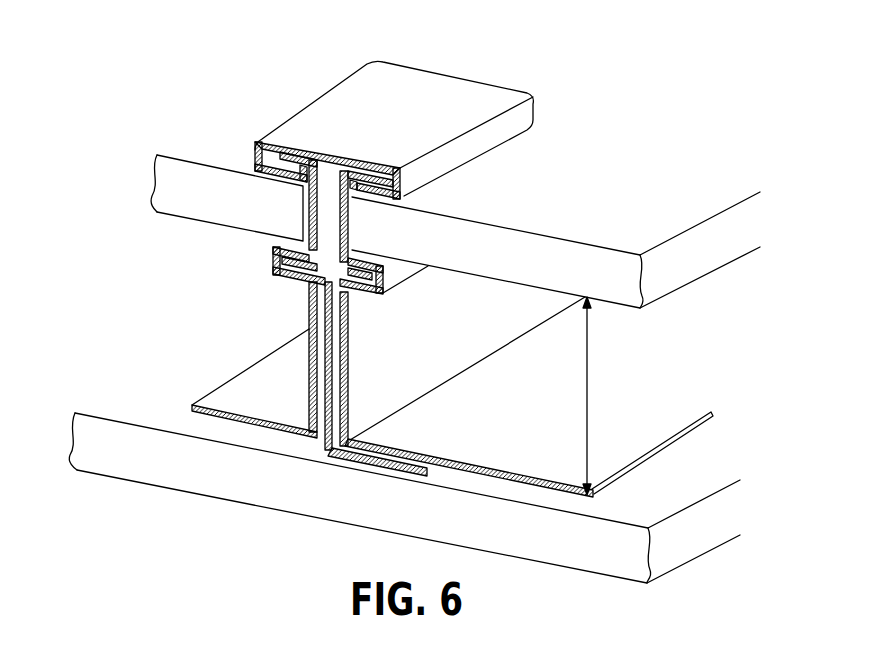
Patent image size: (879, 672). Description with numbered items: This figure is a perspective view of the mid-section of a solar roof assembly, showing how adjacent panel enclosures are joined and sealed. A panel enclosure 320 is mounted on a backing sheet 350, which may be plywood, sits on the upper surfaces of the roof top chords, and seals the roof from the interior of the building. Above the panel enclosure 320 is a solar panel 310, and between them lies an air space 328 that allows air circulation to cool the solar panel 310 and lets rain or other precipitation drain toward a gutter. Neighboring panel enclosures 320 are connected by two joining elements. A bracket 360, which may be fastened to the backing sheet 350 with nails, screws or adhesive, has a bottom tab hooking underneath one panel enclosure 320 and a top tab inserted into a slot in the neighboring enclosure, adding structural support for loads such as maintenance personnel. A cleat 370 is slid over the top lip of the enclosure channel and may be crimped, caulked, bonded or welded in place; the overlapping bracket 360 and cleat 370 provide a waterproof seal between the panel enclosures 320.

The solar panel 310 is at (521, 253).
The panel enclosure 320 is at (232, 397).
The air space 328 is at (607, 396).
The backing sheet 350 is at (193, 477).
The bracket 360 is at (360, 492).
The cleat 370 is at (453, 97).